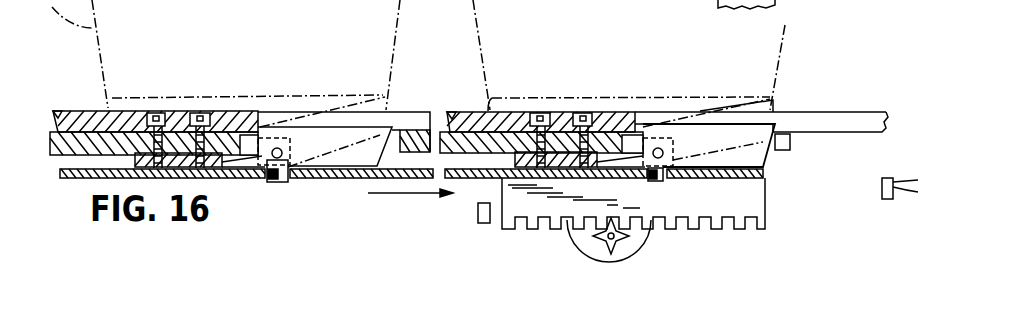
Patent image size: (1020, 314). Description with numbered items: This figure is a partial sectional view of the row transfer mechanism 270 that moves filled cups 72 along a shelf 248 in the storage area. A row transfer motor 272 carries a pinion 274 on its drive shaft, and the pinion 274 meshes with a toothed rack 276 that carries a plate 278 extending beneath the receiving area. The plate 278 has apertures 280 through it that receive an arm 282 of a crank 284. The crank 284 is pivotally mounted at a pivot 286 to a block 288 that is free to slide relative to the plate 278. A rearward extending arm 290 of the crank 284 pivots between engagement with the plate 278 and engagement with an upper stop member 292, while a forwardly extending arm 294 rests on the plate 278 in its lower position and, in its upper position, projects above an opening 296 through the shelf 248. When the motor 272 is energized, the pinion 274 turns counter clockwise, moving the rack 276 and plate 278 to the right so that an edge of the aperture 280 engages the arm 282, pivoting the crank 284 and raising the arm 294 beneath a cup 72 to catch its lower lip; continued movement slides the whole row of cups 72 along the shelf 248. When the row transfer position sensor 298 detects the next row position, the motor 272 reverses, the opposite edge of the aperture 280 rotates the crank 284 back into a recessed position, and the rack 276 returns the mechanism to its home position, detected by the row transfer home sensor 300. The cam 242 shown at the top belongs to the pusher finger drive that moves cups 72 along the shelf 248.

The cup 72 is at (79, 54).
The cam 242 is at (715, 9).
The shelf 248 is at (862, 111).
The transfer mechanism 270 is at (783, 103).
The row transfer motor 272 is at (648, 245).
The pinion 274 is at (575, 243).
The toothed rack 276 is at (766, 192).
The plate 278 is at (766, 170).
The aperture 280 is at (287, 182).
The arm 282 is at (273, 183).
The crank 284 is at (280, 122).
The pivot 286 is at (281, 149).
The block 288 is at (693, 100).
The rearward extending arm 290 is at (245, 163).
The upper stop member 292 is at (213, 110).
The forwardly extending arm 294 is at (362, 166).
The opening 296 is at (253, 133).
The row transfer position sensor 298 is at (889, 178).
The row transfer home sensor 300 is at (480, 224).